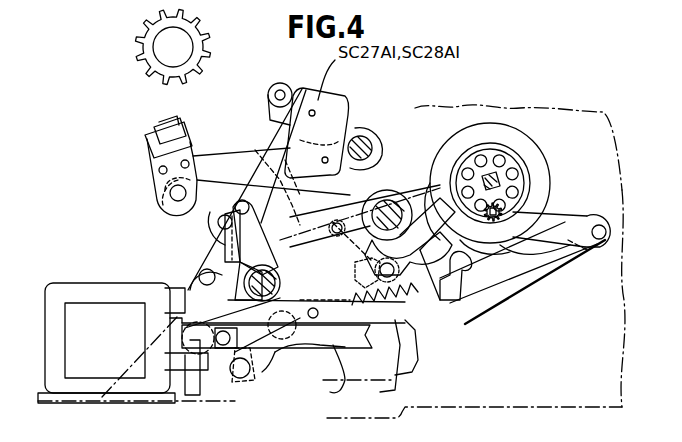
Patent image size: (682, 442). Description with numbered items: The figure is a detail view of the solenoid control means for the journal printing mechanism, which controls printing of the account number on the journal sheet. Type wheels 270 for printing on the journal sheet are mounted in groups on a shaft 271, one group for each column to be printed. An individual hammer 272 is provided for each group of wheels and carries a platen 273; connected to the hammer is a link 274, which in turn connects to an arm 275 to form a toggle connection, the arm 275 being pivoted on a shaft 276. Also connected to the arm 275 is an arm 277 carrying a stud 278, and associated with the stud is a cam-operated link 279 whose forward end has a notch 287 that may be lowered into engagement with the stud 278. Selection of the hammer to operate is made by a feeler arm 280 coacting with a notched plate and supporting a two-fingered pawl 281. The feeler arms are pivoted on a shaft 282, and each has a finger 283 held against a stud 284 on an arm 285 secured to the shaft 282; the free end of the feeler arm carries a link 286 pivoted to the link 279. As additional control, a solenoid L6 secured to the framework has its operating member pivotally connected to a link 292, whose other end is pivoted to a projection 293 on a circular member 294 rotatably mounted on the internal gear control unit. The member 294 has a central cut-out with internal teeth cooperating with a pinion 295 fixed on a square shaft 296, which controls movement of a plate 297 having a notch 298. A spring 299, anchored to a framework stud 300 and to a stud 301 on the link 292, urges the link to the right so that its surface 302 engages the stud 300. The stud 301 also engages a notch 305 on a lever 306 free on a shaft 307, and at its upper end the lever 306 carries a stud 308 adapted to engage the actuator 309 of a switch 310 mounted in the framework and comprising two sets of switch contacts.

The type wheels 270 is at (150, 24).
The shaft 271 is at (183, 47).
The hammer 272 is at (204, 166).
The platen 273 is at (163, 120).
The link 274 is at (190, 219).
The arm 275 is at (202, 225).
The shaft 276 is at (207, 273).
The arm 277 is at (223, 380).
The stud 278 is at (247, 372).
The link 279 is at (333, 345).
The feeler arm 280 is at (488, 307).
The two-fingered pawl 281 is at (518, 288).
The shaft 282 is at (384, 198).
The finger 283 is at (372, 278).
The stud 284 is at (365, 290).
The arm 285 is at (368, 255).
The link 286 is at (288, 236).
The notch 287 is at (283, 357).
The link 292 is at (413, 325).
The projection 293 is at (563, 220).
The circular member 294 is at (495, 144).
The pinion 295 is at (540, 204).
The square shaft 296 is at (500, 205).
The plate 297 is at (477, 138).
The notch 298 is at (552, 273).
The spring 299 is at (287, 313).
The stud 300 is at (463, 327).
The stud 301 is at (277, 337).
The surface 302 is at (442, 288).
The notch 305 is at (288, 258).
The lever 306 is at (283, 216).
The shaft 307 is at (227, 257).
The stud 308 is at (271, 171).
The actuator 309 is at (282, 152).
The switch 310 is at (335, 106).
The solenoid L6 is at (95, 315).